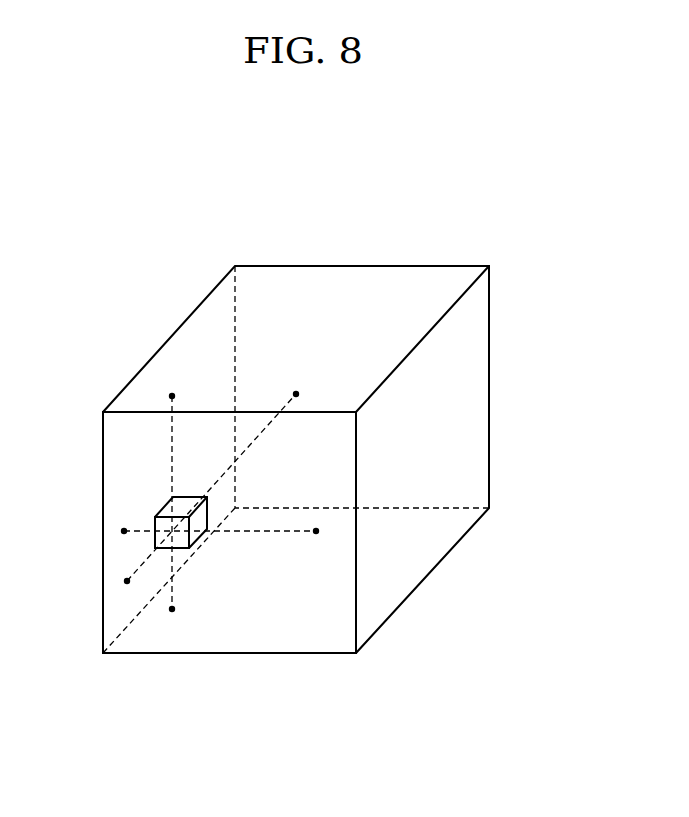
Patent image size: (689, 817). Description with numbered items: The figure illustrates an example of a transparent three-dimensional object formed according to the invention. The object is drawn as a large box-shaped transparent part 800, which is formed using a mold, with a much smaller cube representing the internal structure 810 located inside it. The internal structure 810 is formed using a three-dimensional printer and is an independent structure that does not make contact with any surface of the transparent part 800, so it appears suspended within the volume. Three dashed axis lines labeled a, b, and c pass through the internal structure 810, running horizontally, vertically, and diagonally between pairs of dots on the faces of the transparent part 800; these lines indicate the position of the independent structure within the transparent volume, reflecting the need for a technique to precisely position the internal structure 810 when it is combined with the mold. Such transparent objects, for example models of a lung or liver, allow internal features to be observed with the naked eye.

The transparent part 800 is at (363, 266).
The internal structure 810 is at (165, 503).
The axis a-a' a is at (227, 522).
The axis b-b' b is at (171, 505).
The axis c-c' c is at (214, 488).